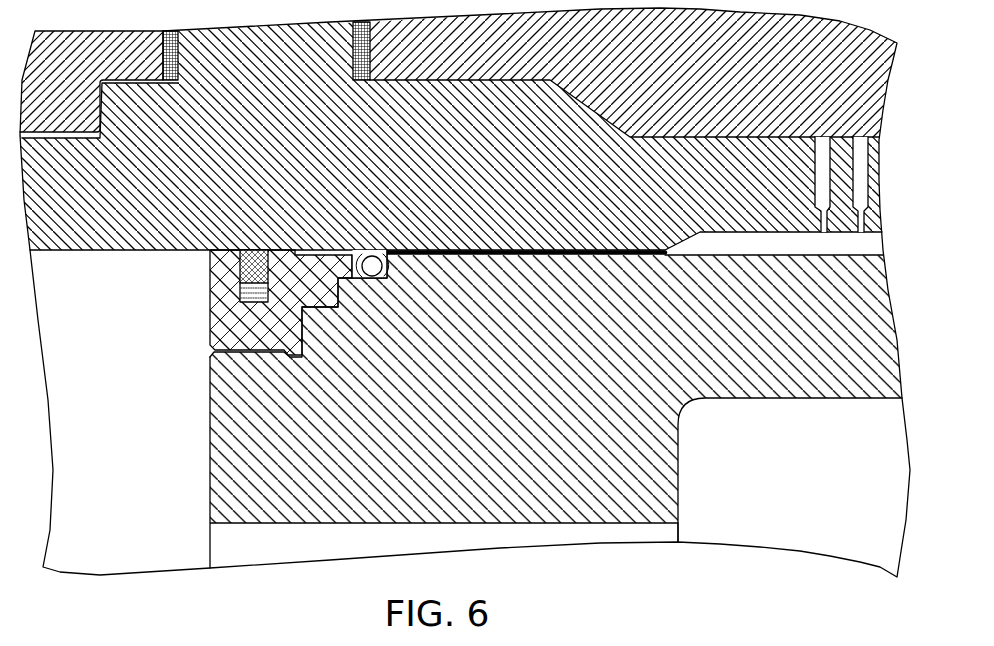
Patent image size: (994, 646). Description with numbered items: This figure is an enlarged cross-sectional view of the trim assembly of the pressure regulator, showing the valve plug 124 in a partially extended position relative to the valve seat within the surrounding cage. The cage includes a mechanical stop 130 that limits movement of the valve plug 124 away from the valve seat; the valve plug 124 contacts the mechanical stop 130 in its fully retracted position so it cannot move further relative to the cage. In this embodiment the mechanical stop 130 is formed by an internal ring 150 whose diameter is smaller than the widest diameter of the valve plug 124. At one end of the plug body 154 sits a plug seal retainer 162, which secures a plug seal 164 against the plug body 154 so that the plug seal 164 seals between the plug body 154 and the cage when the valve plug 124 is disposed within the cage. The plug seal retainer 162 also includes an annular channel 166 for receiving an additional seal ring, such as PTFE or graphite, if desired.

The valve plug 124 is at (855, 358).
The mechanical stop 130 is at (670, 163).
The internal ring 150 is at (669, 251).
The plug body 154 is at (663, 459).
The plug seal retainer 162 is at (213, 318).
The plug seal 164 is at (373, 277).
The annular channel 166 is at (249, 262).